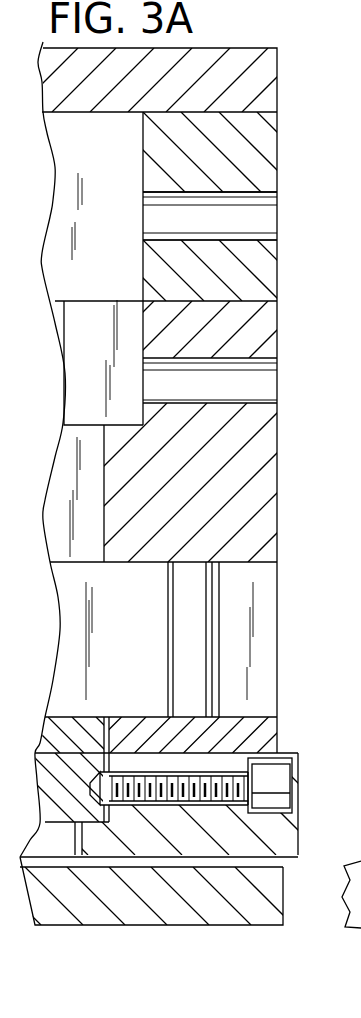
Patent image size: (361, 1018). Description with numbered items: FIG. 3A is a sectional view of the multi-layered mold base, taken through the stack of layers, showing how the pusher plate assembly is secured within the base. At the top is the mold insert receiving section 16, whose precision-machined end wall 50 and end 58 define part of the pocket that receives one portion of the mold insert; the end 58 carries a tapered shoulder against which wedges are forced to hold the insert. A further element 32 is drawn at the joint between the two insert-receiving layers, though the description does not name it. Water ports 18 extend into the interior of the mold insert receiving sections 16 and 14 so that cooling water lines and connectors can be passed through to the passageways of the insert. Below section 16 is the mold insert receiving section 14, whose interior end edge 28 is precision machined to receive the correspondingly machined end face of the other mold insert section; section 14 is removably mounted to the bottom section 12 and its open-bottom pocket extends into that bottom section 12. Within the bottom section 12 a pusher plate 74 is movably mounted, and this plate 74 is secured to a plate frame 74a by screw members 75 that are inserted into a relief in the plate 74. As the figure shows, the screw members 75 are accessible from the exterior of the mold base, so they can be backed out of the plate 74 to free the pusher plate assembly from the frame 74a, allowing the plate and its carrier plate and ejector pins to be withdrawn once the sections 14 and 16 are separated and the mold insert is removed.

The bottom section 12 is at (280, 685).
The mold insert receiving section 14 is at (280, 523).
The mold insert receiving section 16 is at (278, 143).
The water ports 18 is at (242, 192).
The end edge 28 is at (142, 333).
The bearing member 32 is at (277, 264).
The end wall 50 is at (142, 167).
The end 58 is at (277, 336).
The pusher plate 74 is at (53, 798).
The plate frame 74a is at (172, 833).
The screw members 75 is at (282, 780).